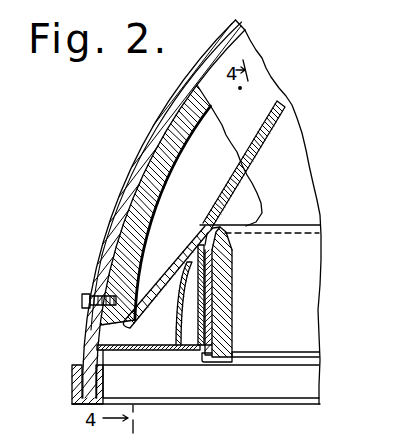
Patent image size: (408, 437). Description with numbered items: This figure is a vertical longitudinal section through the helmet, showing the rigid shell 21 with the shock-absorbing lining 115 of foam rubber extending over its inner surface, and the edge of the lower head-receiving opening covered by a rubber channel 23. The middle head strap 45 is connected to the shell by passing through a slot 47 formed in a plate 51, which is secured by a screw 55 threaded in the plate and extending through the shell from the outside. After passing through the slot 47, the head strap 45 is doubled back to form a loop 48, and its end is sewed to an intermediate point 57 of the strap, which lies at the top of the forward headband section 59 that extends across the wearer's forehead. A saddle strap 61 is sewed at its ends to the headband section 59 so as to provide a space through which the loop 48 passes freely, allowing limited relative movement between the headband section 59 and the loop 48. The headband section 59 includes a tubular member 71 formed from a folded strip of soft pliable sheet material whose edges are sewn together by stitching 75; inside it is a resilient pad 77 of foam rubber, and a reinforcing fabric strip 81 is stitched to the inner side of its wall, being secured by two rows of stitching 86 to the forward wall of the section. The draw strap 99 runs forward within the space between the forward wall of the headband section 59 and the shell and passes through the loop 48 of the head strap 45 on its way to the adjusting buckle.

The rigid shell 21 is at (141, 163).
The lining 115 is at (167, 176).
The head strap 45 is at (262, 131).
The stitching 75 is at (243, 226).
The forward headband section 59 is at (305, 218).
The intermediate point 57 is at (203, 230).
The stitching 86 is at (216, 270).
The resilient pad 77 is at (232, 295).
The tubular member 71 is at (232, 315).
The reinforcing fabric strip 81 is at (207, 333).
The plate 51 is at (99, 282).
The screw 55 is at (82, 302).
The slot 47 is at (97, 329).
The draw strap 99 is at (169, 307).
The rubber channel 23 is at (72, 381).
The loop 48 is at (132, 352).
The saddle strap 61 is at (188, 356).